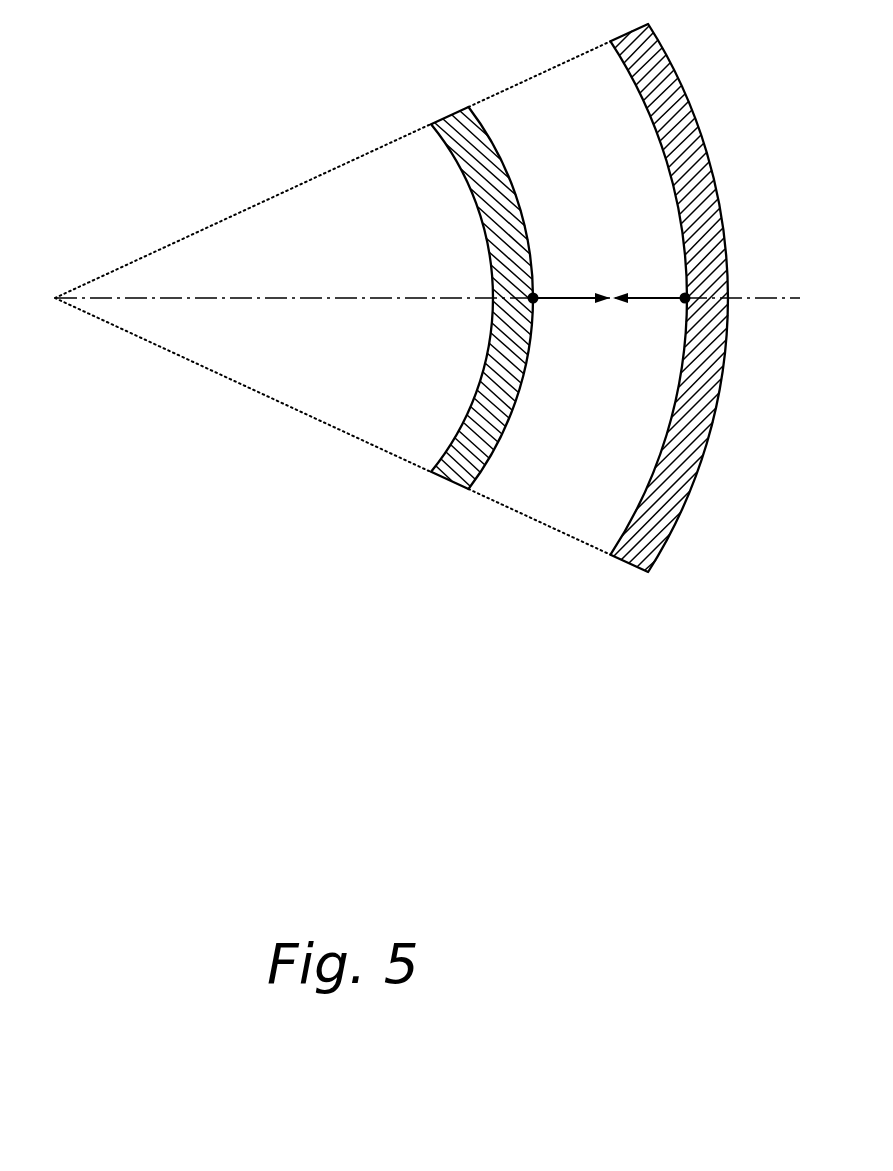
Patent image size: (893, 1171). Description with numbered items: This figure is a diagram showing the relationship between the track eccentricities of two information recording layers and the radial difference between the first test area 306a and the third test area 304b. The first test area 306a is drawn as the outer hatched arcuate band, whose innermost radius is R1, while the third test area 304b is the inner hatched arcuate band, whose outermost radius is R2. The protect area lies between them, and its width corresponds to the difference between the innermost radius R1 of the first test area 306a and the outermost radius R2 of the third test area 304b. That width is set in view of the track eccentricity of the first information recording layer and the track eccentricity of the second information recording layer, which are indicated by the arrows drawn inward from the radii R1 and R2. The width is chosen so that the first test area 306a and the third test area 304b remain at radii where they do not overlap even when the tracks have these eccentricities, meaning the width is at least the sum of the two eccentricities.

The third test area 304b is at (437, 470).
The first test area 306a is at (650, 558).
The innermost radius of the first test area R1 is at (669, 317).
The outermost radius of the third test area R2 is at (552, 317).